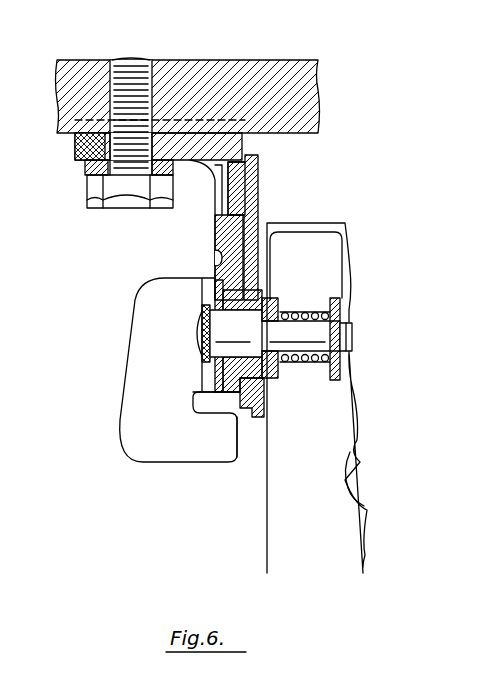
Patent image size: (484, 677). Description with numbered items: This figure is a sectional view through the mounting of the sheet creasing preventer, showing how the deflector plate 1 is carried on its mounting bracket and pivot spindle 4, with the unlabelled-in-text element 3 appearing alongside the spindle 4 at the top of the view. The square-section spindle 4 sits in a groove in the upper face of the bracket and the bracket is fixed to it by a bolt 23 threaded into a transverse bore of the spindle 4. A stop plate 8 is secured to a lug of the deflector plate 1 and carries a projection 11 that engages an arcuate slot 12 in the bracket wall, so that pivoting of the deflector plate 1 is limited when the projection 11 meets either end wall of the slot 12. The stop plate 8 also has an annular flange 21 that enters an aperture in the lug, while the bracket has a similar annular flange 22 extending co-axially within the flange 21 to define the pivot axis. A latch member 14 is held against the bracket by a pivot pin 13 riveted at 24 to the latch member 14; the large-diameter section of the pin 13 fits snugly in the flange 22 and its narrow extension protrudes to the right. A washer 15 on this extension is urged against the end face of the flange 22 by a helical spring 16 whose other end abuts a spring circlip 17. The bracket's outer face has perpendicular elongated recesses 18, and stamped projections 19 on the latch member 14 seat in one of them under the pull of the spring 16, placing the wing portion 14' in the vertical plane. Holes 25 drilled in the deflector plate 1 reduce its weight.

The deflector plate 1 is at (345, 377).
The lower plate 3 is at (75, 141).
The mounting spindle 4 is at (218, 78).
The stop plate 8 is at (258, 176).
The projection 11 is at (255, 202).
The arcuate slot 12 is at (222, 218).
The pivot pin 13 is at (352, 337).
The latch member 14 is at (180, 370).
The wing portion 14' is at (201, 445).
The washer 15 is at (278, 300).
The helical spring 16 is at (292, 318).
The spring circlip 17 is at (335, 364).
The elongated recesses 18 is at (212, 258).
The projections 19 is at (218, 298).
The annular flange 21 is at (258, 300).
The annular flange 22 is at (264, 386).
The bolt 23 is at (87, 160).
The rivet 24 is at (205, 341).
The holes 25 is at (352, 497).